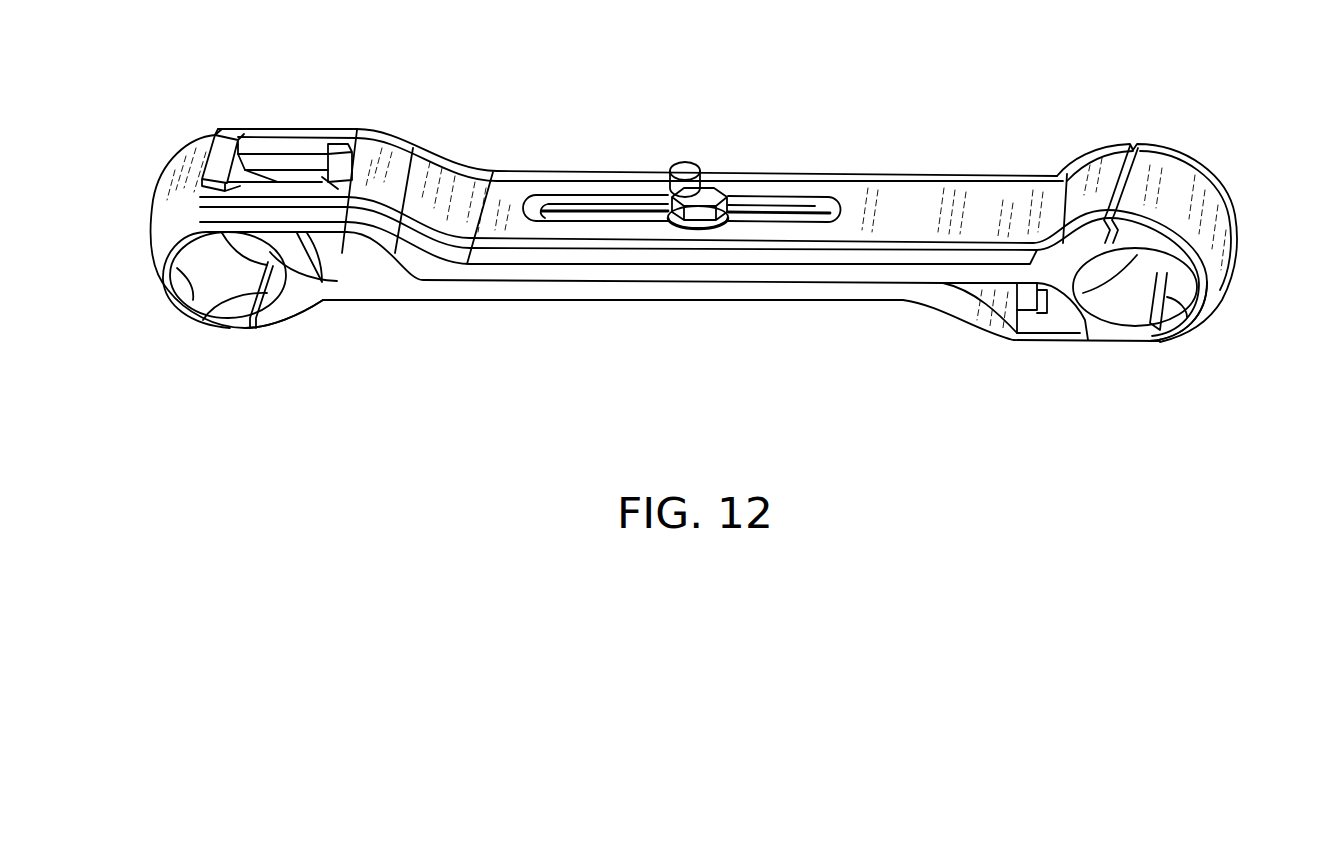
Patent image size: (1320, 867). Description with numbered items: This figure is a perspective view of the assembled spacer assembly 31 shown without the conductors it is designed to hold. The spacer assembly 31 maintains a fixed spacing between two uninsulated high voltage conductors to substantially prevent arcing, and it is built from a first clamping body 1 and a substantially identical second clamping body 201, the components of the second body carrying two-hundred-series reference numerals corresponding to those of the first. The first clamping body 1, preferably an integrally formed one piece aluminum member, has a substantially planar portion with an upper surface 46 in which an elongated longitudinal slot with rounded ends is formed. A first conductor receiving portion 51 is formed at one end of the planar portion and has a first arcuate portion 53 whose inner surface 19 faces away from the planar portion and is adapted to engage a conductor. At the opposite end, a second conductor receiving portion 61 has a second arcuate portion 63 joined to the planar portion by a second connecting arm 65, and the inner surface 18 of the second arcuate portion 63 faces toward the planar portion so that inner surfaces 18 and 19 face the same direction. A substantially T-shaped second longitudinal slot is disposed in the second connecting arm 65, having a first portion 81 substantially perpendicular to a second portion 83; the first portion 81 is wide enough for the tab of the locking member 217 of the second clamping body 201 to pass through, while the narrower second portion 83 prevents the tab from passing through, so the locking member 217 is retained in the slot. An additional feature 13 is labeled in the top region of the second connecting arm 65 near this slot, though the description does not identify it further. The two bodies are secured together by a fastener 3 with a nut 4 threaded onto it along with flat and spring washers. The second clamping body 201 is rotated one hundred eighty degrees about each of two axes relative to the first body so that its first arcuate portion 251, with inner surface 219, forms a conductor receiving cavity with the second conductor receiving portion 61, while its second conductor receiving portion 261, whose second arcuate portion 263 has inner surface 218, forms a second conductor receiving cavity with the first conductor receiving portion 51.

The first clamping body 1 is at (914, 185).
The fastener 3 is at (682, 150).
The nut 4 is at (711, 197).
The recess 13 is at (280, 148).
The inner surface 18 is at (204, 297).
The inner surface 19 is at (1090, 293).
The spacer assembly 31 is at (652, 337).
The upper surface 46 is at (1000, 197).
The first conductor receiving portion 51 is at (1111, 127).
The first arcuate portion 53 is at (1097, 313).
The second conductor receiving portion 61 is at (149, 180).
The second arcuate portion 63 is at (150, 238).
The second connecting arm 65 is at (320, 140).
The first portion 81 is at (355, 140).
The second portion 83 is at (262, 145).
The second clamping body 201 is at (901, 313).
The locking member 217 is at (212, 127).
The inner surface 218 is at (1172, 311).
The inner surface 219 is at (248, 298).
The first arcuate portion 251 is at (303, 323).
The second conductor receiving portion 261 is at (1198, 346).
The second arcuate portion 263 is at (1233, 240).